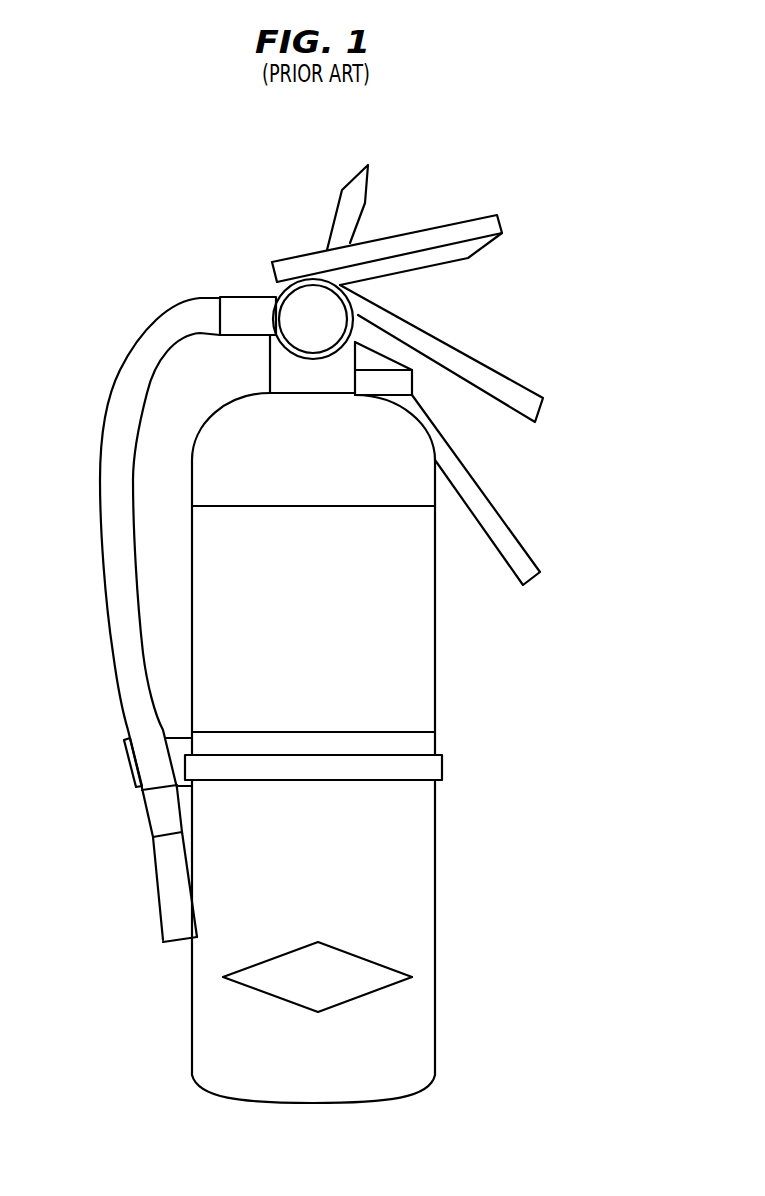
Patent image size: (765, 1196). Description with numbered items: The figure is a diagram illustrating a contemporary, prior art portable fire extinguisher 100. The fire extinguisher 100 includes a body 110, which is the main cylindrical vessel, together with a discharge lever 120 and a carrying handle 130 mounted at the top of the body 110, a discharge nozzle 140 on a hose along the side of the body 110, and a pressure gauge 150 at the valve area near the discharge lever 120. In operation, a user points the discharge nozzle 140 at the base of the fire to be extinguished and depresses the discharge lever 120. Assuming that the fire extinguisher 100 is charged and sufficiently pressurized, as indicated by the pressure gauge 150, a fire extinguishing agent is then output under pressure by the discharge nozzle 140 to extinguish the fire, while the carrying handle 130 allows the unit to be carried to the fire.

The fire extinguisher 100 is at (331, 144).
The body 110 is at (420, 1088).
The discharge lever 120 is at (468, 219).
The carrying handle 130 is at (541, 407).
The discharge nozzle 140 is at (158, 903).
The pressure gauge 150 is at (296, 303).